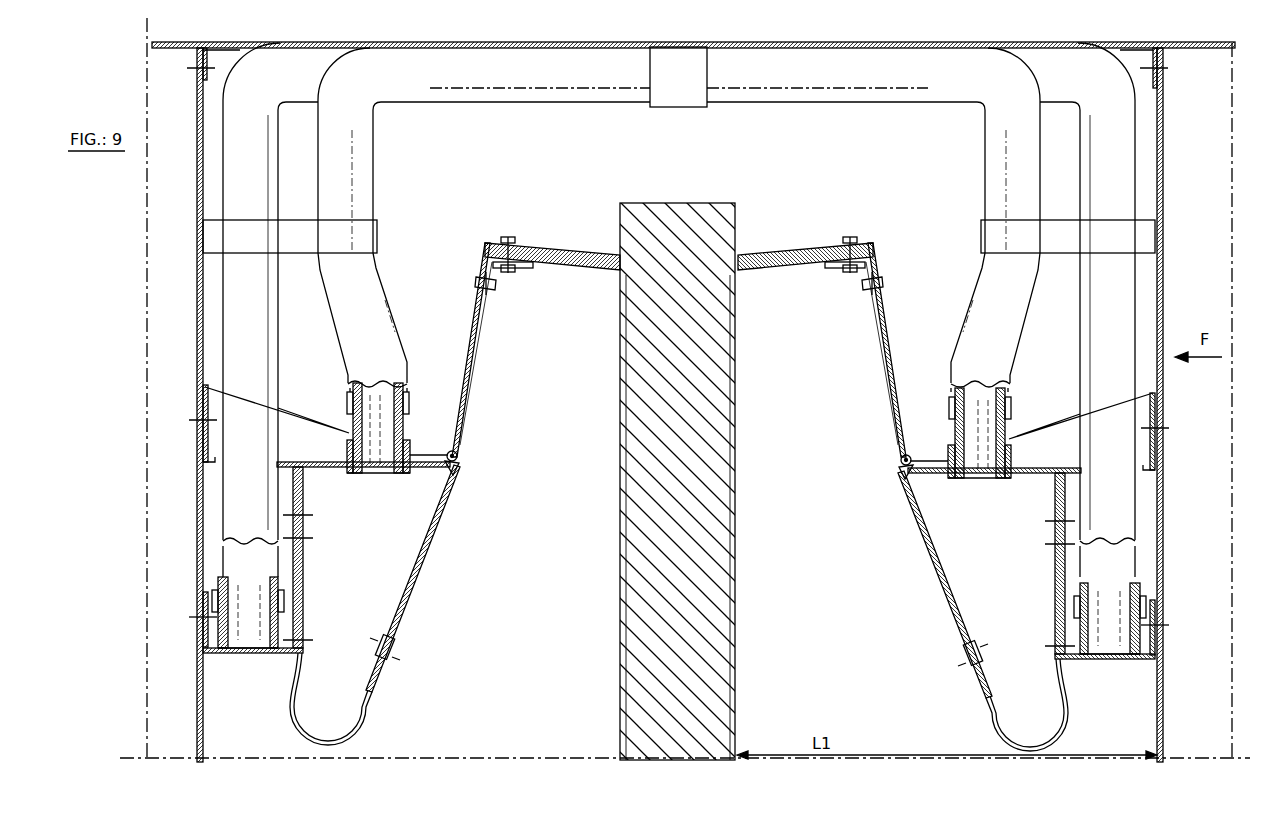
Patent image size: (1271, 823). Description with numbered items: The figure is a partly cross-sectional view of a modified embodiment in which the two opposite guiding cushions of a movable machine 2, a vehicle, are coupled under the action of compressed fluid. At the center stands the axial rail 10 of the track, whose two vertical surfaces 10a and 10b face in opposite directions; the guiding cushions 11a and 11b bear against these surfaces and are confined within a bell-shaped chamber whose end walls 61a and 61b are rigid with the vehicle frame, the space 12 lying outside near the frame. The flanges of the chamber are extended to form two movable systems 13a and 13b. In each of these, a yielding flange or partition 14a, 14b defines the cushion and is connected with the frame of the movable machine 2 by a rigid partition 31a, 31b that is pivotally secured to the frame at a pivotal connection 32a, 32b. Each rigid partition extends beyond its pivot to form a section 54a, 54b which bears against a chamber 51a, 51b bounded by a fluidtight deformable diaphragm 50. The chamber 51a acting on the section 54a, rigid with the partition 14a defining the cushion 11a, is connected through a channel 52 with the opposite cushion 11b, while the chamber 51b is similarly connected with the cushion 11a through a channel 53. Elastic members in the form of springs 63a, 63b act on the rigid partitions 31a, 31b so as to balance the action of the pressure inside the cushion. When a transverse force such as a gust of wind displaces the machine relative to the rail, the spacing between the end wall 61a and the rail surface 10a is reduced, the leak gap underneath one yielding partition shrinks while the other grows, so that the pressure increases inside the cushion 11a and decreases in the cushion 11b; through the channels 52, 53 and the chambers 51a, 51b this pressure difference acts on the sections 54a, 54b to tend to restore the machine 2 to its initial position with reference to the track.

The movable machine 2 is at (1175, 164).
The axial rail 10 is at (680, 403).
The vertical surface 10a is at (736, 553).
The vertical surface 10b is at (618, 490).
The guiding cushion 11a is at (870, 675).
The guiding cushion 11b is at (544, 675).
The side space 12 is at (180, 527).
The movable system 13a is at (856, 350).
The movable system 13b is at (505, 350).
The yielding flange or partition 14a is at (790, 257).
The yielding flange or partition 14b is at (576, 257).
The rigid partition 31a is at (886, 390).
The rigid partition 31b is at (470, 398).
The pivotal connection 32a is at (910, 453).
The pivotal connection 32b is at (449, 452).
The fluidtight deformable diaphragm 50 is at (356, 741).
The chamber 51a is at (1024, 582).
The chamber 51b is at (378, 582).
The channel 52 is at (266, 356).
The channel 53 is at (335, 300).
The section 54a is at (925, 598).
The section 54b is at (421, 548).
The end wall 61a is at (1156, 748).
The end wall 61b is at (199, 748).
The spring 63a is at (899, 430).
The spring 63b is at (460, 430).